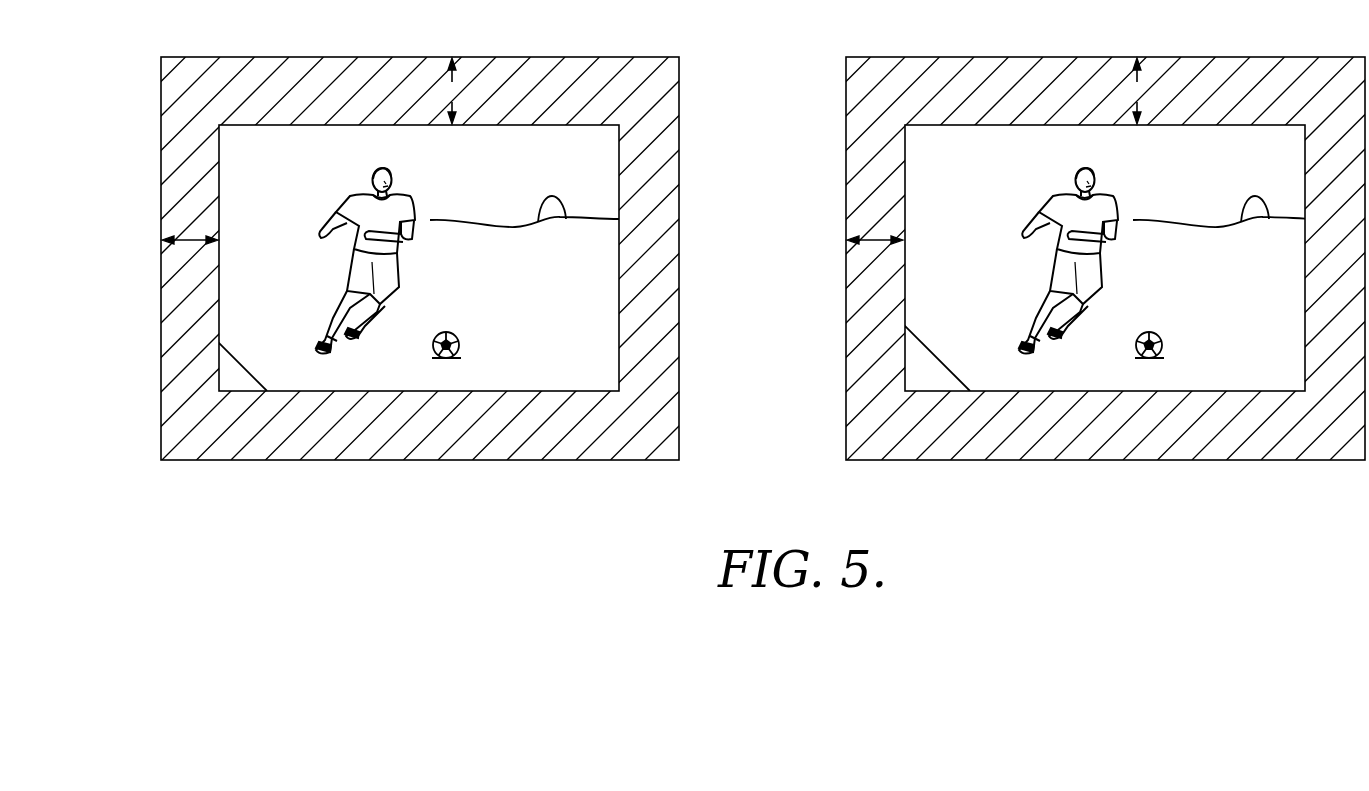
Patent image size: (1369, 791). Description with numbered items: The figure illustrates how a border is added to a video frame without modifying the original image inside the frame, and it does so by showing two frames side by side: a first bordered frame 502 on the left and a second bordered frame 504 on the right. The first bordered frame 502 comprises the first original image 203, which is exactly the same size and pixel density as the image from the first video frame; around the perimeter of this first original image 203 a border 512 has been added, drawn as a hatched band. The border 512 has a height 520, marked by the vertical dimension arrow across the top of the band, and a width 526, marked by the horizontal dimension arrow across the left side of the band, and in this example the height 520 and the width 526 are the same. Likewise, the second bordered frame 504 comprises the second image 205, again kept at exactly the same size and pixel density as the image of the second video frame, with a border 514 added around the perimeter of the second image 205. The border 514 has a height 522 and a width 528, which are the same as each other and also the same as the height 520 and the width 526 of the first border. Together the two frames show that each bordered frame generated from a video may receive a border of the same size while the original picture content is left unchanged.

The first bordered frame 502 is at (455, 462).
The second bordered frame 504 is at (1141, 462).
The border 512 is at (293, 433).
The border 514 is at (960, 440).
The first original image 203 is at (602, 378).
The second image 205 is at (1287, 378).
The height 520 is at (464, 89).
The height 522 is at (1149, 89).
The width 526 is at (182, 269).
The width 528 is at (868, 269).